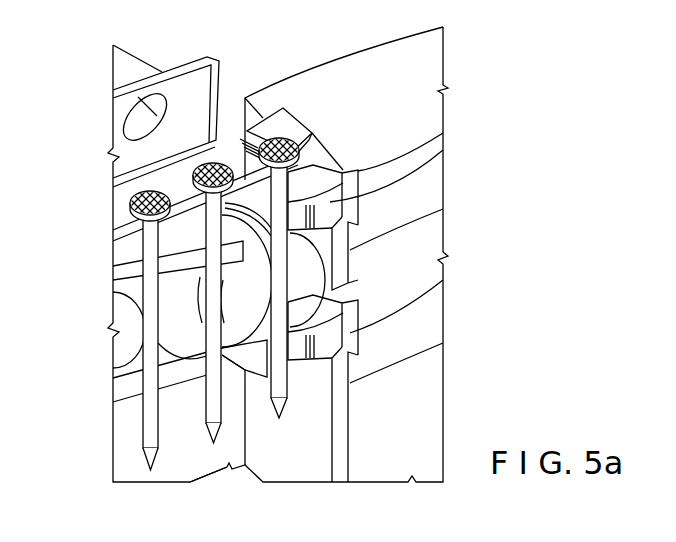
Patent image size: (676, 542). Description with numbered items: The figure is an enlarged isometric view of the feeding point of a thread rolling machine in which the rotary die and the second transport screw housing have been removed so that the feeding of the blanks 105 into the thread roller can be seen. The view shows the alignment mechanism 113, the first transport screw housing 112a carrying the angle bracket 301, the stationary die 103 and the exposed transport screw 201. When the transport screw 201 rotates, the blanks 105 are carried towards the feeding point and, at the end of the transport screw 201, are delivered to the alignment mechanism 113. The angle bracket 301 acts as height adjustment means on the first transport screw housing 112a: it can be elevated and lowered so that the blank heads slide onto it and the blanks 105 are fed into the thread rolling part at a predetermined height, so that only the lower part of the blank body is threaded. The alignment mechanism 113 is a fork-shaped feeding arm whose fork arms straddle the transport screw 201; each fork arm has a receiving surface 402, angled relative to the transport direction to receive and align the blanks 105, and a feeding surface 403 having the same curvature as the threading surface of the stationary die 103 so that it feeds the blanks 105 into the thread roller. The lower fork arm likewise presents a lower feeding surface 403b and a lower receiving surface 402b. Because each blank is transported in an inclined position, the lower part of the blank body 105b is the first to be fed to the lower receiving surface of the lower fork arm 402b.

The stationary die 103 is at (417, 63).
The alignment mechanism 113 is at (247, 180).
The angle bracket 301 is at (137, 152).
The blanks 105 is at (150, 242).
The transport screw 201 is at (125, 345).
The feeding surface 403 is at (443, 157).
The receiving surface 402 is at (443, 209).
The lower feeding surface 403b is at (443, 294).
The lower receiving surface of the lower fork arm 402b is at (443, 344).
The first transport screw housing 112a is at (177, 450).
The lower part of the blank body 105b is at (223, 415).